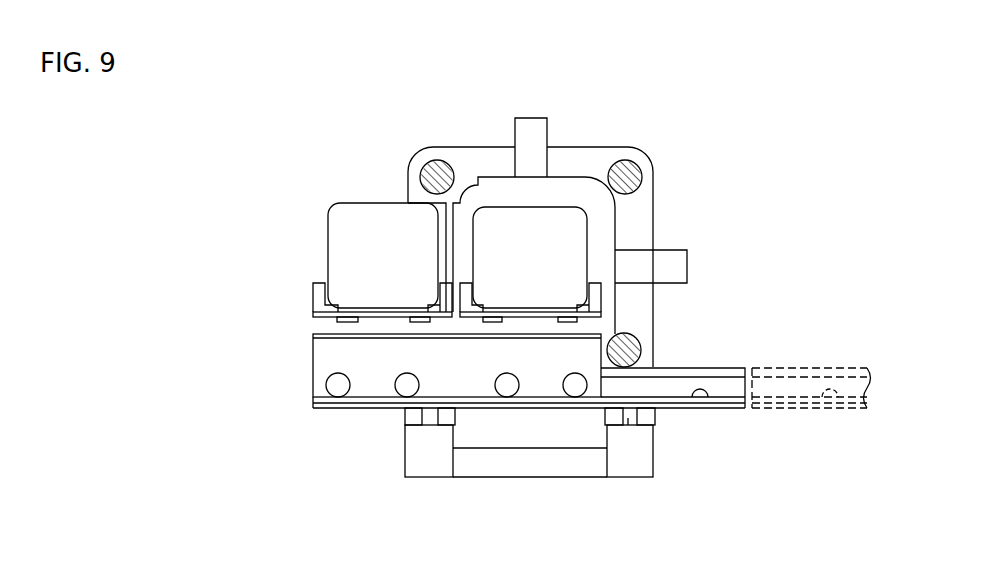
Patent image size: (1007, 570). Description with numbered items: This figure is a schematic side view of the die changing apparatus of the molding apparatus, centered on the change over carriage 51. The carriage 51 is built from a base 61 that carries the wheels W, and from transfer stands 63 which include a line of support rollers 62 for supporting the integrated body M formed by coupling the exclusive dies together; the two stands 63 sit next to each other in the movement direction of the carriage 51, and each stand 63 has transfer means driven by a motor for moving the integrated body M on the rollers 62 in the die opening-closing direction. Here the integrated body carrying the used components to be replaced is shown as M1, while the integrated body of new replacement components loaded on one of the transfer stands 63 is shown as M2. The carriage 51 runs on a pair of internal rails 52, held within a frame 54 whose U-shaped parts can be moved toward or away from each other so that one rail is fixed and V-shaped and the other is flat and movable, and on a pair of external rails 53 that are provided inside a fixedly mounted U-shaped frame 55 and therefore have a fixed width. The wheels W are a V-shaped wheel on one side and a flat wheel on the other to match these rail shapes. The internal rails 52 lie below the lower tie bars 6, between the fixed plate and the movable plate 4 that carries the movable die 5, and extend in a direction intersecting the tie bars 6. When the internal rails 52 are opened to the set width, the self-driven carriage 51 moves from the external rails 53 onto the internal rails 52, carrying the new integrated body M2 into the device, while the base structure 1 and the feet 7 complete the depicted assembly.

The base block 1 is at (396, 471).
The movable plate 4 is at (660, 156).
The movable die 5 is at (567, 160).
The tie bars 6 is at (430, 163).
The feet 7 is at (630, 436).
The change over carriage 51 is at (420, 346).
The internal rails 52 is at (709, 399).
The external rails 53 is at (838, 405).
The frame 54 is at (720, 367).
The U-shaped frame 55 is at (813, 367).
The base 61 is at (330, 358).
The support rollers 62 is at (493, 318).
The transfer stands 63 is at (315, 310).
The wheels W is at (570, 392).
The integrated body M is at (407, 180).
The integrated body of used components M1 is at (500, 217).
The integrated body of new components M2 is at (338, 227).